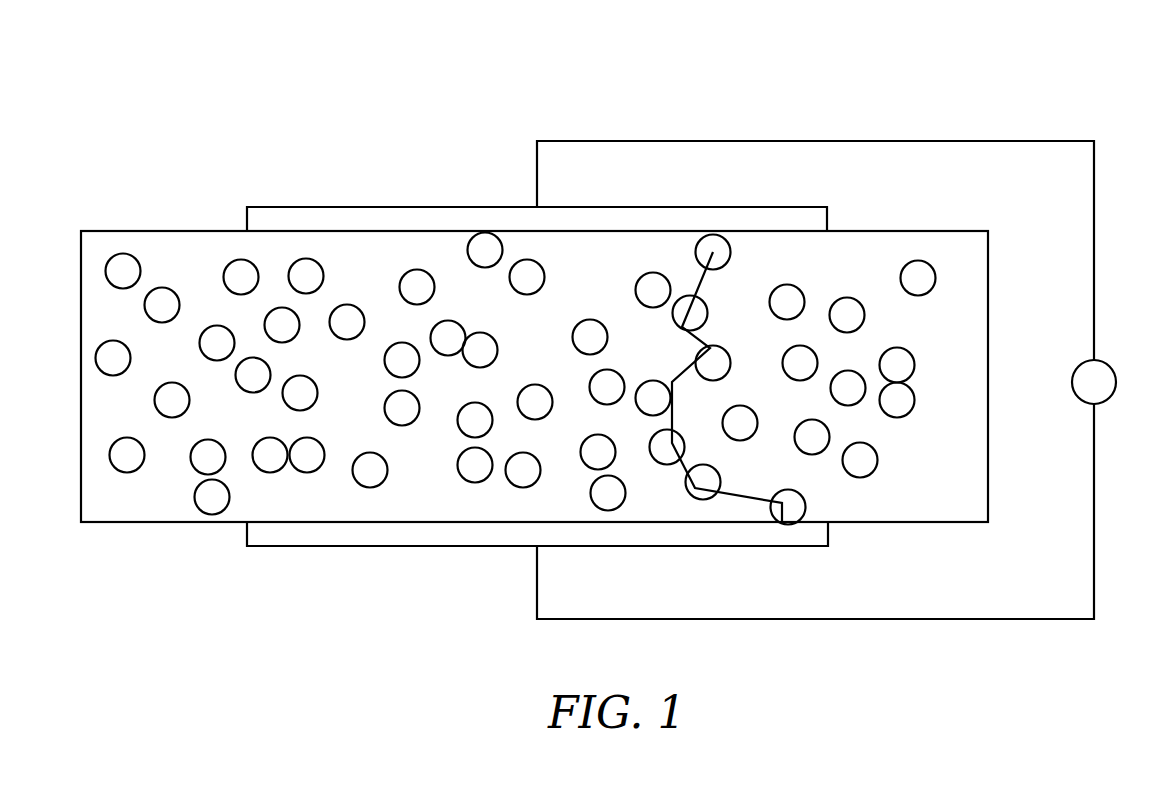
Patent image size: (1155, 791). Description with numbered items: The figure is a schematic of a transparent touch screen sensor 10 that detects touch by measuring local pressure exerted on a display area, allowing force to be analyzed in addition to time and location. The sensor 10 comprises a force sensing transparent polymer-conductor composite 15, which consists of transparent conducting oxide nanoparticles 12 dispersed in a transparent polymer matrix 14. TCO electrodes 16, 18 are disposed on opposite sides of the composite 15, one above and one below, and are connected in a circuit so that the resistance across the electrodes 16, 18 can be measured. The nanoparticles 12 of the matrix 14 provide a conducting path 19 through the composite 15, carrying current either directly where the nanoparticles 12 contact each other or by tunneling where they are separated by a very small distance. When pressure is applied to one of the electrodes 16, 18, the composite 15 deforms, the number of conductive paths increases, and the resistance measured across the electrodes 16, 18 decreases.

The transparent touch screen sensor 10 is at (1038, 103).
The transparent conducting oxide nanoparticles 12 is at (302, 472).
The transparent polymer matrix 14 is at (884, 502).
The transparent polymer-conductor composite 15 is at (988, 475).
The TCO electrode 16 is at (398, 207).
The TCO electrode 18 is at (392, 548).
The conducting path 19 is at (740, 497).